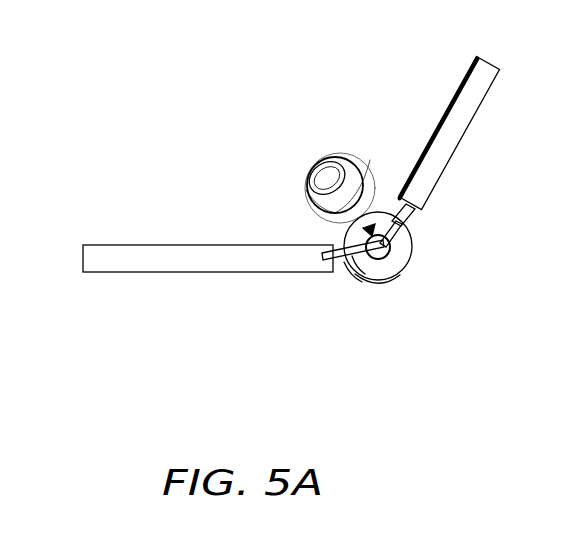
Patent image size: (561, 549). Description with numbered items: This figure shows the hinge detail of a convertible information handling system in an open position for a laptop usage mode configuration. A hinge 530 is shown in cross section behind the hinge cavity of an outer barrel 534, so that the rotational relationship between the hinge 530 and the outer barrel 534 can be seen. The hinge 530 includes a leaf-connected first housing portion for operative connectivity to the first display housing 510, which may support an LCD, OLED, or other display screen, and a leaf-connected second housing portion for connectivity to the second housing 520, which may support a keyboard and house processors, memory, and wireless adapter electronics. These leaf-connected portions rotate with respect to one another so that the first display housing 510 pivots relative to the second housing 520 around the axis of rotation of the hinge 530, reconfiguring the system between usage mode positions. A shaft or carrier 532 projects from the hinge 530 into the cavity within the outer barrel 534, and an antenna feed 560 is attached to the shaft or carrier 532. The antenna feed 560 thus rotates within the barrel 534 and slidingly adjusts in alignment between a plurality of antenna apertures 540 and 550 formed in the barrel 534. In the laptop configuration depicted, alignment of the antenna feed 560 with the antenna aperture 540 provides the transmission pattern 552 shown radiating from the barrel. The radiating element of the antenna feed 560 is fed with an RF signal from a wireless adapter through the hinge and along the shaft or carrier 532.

The first display housing 510 is at (487, 60).
The second housing 520 is at (205, 272).
The hinge 530 is at (410, 227).
The shaft or carrier 532 is at (397, 255).
The outer barrel 534 is at (393, 280).
The antenna aperture 540 is at (345, 222).
The antenna aperture 550 is at (370, 280).
The transmission pattern 552 is at (310, 178).
The antenna feed 560 is at (376, 228).